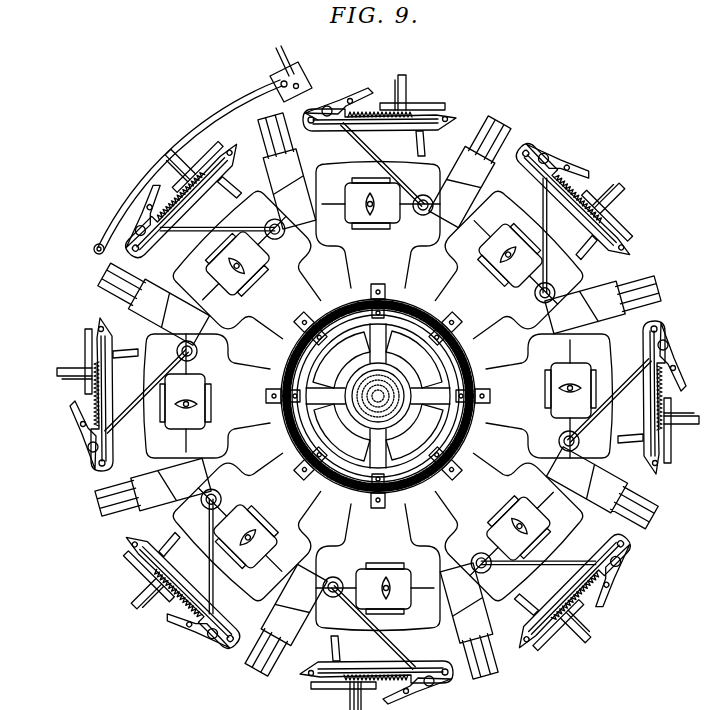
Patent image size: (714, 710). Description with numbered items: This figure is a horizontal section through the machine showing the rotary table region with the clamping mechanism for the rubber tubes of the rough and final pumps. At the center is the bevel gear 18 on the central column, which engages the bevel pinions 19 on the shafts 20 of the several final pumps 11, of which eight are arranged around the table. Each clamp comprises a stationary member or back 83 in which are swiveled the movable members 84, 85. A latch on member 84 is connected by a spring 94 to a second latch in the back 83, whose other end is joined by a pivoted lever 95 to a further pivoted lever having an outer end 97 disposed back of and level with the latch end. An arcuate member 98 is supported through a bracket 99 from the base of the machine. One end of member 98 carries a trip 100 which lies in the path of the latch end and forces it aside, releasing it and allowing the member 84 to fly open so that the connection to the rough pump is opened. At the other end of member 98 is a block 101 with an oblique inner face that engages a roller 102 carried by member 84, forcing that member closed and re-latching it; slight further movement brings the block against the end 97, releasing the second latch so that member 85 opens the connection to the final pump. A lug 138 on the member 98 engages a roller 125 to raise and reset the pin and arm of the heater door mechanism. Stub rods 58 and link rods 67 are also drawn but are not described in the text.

The final pumps 11 is at (258, 334).
The bevel gear 18 is at (466, 362).
The bevel pinions 19 is at (470, 428).
The shafts 20 is at (388, 296).
The connecting stub rod 58 is at (232, 190).
The pivot link rod 67 is at (398, 192).
The stationary member or back 83 is at (104, 367).
The movable member 84 is at (344, 690).
The movable member 85 is at (94, 432).
The spring 94 is at (384, 684).
The pivoted lever 95 is at (196, 568).
The outer end 97 is at (74, 380).
The arcuate member 98 is at (200, 116).
The bracket 99 is at (320, 104).
The trip 100 is at (94, 254).
The block 101 is at (306, 68).
The roller 102 is at (406, 92).
The roller 125 is at (104, 508).
The lug 138 is at (278, 92).